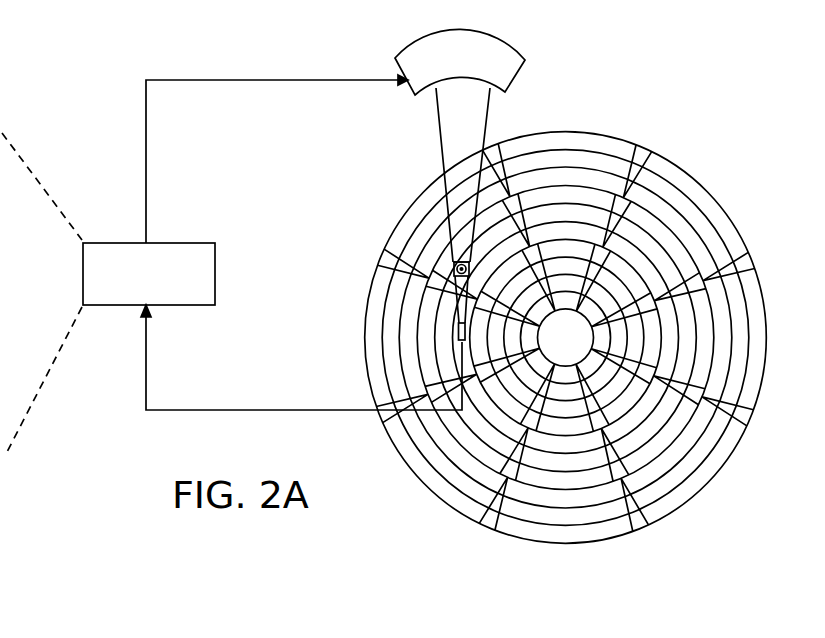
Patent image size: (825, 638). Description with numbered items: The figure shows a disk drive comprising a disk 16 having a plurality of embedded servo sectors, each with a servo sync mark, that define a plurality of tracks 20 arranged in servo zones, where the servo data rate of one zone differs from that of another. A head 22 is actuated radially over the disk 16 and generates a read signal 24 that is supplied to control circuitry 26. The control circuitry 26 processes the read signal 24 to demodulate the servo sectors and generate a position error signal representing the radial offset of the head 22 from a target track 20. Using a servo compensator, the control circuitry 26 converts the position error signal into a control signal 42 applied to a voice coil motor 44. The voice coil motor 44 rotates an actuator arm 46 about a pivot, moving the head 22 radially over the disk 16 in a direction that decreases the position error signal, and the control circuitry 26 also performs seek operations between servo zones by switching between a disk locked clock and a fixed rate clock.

The disk 16 is at (566, 316).
The track 20 is at (565, 157).
The head 22 is at (452, 344).
The read signal 24 is at (262, 410).
The control circuitry 26 is at (185, 243).
The control signal 42 is at (146, 148).
The voice coil motor 44 is at (413, 91).
The actuator arm 46 is at (443, 161).